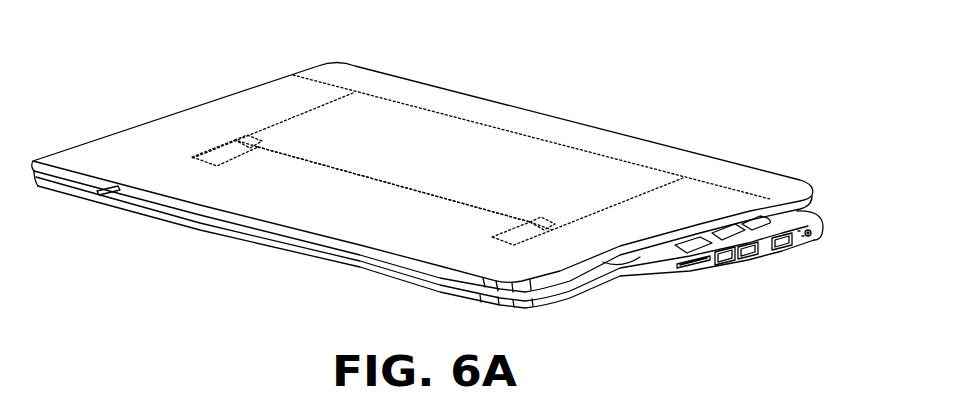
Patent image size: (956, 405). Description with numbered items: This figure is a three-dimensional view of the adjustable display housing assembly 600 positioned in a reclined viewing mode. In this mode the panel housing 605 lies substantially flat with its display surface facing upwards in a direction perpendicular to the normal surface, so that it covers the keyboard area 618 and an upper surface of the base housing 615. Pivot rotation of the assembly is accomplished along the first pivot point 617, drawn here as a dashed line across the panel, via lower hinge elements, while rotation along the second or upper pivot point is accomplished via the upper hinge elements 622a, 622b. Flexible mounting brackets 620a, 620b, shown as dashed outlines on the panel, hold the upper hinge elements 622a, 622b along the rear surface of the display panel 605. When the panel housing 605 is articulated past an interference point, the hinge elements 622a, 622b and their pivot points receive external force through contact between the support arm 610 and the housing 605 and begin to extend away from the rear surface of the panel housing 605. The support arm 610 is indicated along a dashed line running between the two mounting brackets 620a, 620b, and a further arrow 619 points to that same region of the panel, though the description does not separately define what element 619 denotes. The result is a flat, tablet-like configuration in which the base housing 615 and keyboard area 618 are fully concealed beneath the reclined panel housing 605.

The adjustable display housing assembly 600 is at (160, 27).
The panel housing 605 is at (113, 137).
The support arm 610 is at (372, 179).
The base housing 615 is at (643, 273).
The first pivot point 617 is at (578, 141).
The keyboard area 618 is at (768, 218).
The bezel boundary line 619 is at (435, 188).
The flexible mounting bracket 620a is at (213, 163).
The flexible mounting bracket 620b is at (512, 238).
The upper hinge element 622a is at (249, 150).
The upper hinge element 622b is at (533, 222).